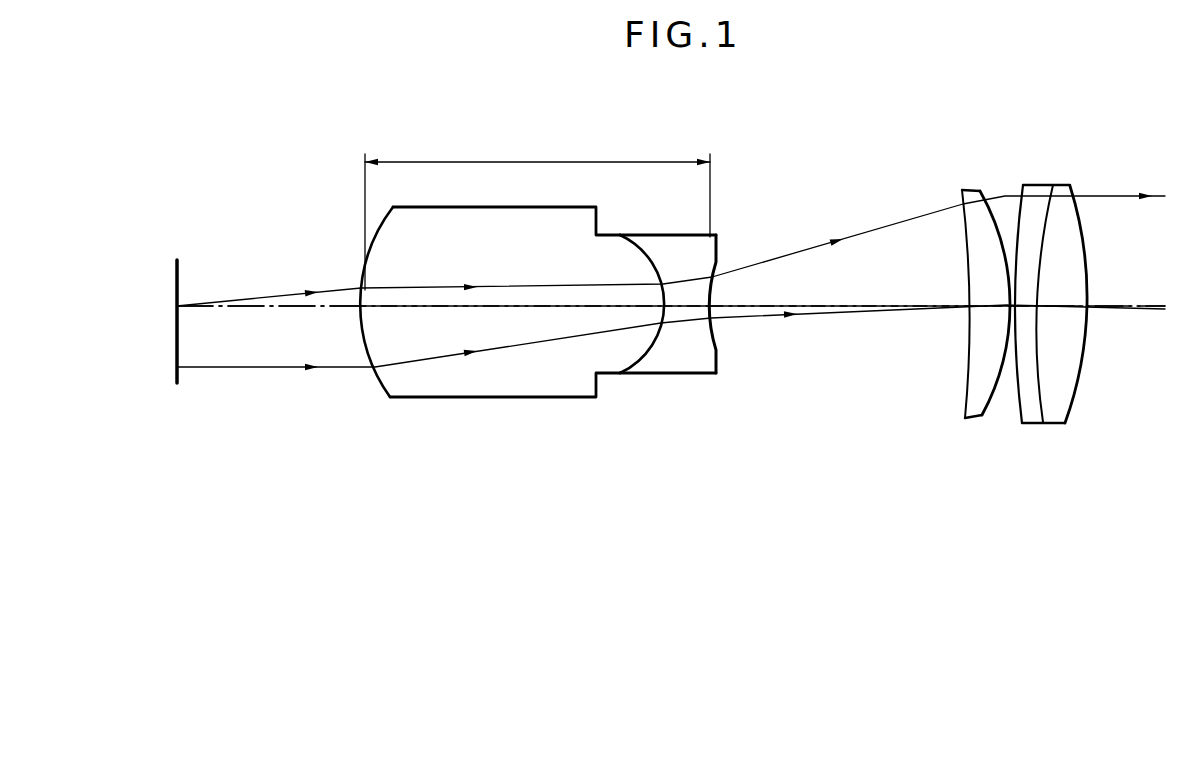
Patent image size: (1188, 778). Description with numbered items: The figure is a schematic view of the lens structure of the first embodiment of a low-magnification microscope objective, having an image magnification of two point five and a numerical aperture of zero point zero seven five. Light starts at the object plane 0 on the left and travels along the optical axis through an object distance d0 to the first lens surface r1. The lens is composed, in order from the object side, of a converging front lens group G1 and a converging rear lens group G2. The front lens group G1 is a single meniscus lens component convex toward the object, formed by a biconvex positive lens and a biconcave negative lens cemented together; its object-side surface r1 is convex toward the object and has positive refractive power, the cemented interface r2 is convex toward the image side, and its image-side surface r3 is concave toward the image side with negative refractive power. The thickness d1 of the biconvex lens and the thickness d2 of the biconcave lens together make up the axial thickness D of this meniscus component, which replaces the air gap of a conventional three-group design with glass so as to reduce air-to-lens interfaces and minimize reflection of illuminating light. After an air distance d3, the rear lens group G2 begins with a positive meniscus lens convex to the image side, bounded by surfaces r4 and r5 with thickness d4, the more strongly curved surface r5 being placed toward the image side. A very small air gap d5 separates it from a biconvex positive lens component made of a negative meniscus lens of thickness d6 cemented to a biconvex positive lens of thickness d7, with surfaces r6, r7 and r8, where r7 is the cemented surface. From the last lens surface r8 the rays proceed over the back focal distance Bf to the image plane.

The object plane 0 is at (179, 278).
The axial thickness of the meniscus lens component D is at (537, 214).
The front lens group G1 is at (730, 104).
The rear lens group G2 is at (1097, 104).
The object-side lens surface of the meniscus lens component r1 is at (384, 396).
The cemented interface r2 is at (646, 358).
The image-side lens surface of the meniscus lens component r3 is at (712, 352).
The fourth lens surface r4 is at (962, 405).
The fifth lens surface r5 is at (987, 405).
The sixth lens surface r6 is at (1019, 405).
The seventh lens surface r7 is at (1044, 405).
The eighth lens surface r8 is at (1072, 405).
The object distance d0 is at (276, 304).
The axial thickness of the biconvex lens d1 is at (509, 305).
The axial thickness of the biconcave lens d2 is at (687, 306).
The air distance between the front and rear lens groups d3 is at (823, 307).
The axial thickness of the positive meniscus lens d4 is at (983, 304).
The air distance between the rear-group components d5 is at (1007, 309).
The axial thickness of the negative meniscus lens d6 is at (1023, 305).
The axial thickness of the biconvex positive lens d7 is at (1055, 308).
The back focal distance Bf is at (1120, 306).